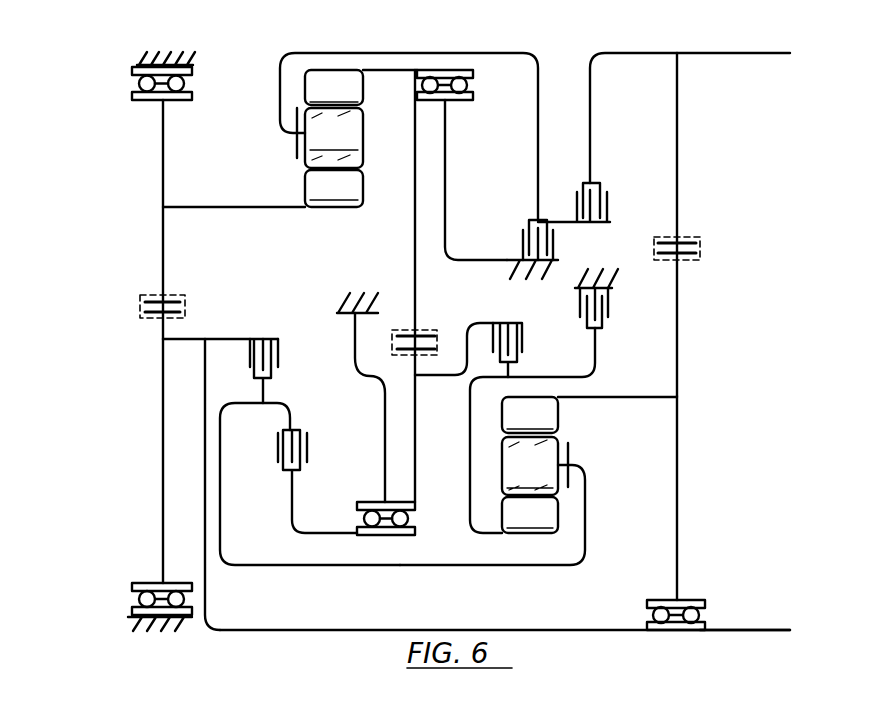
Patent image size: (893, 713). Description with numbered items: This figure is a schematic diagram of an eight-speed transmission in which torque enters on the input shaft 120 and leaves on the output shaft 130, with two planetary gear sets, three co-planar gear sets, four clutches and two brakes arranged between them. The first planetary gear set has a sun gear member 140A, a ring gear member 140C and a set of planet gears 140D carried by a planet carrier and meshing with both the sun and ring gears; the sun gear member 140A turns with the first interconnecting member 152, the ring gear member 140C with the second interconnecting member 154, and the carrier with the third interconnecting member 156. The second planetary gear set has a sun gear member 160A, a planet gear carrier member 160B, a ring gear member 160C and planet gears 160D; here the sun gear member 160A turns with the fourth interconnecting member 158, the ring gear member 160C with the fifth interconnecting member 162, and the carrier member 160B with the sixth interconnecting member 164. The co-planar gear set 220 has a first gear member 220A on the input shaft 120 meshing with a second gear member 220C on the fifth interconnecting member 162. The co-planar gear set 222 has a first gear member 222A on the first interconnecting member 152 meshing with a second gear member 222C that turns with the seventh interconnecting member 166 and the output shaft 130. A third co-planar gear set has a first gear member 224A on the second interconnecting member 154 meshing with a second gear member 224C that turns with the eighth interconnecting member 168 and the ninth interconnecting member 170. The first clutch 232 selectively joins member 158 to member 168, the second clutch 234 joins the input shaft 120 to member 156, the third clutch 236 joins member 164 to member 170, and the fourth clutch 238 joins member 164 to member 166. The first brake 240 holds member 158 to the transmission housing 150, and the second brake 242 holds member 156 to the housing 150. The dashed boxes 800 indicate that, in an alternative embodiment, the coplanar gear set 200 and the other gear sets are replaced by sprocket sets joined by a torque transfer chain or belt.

The input shaft or member 120 is at (588, 122).
The output member or shaft 130 is at (758, 632).
The sun gear member 140A is at (334, 188).
The ring gear member 140C is at (334, 87).
The planet gears 140D is at (334, 138).
The transmission housing 150 is at (135, 62).
The first shaft or interconnecting member 152 is at (220, 205).
The second shaft or interconnecting member 154 is at (382, 72).
The third shaft or interconnecting member 156 is at (497, 55).
The fourth shaft or interconnecting member 158 is at (470, 440).
The sun gear member 160A is at (530, 515).
The planet gear carrier member 160B is at (570, 453).
The ring gear member 160C is at (530, 415).
The planet gears 160D is at (530, 466).
The fifth shaft or interconnecting member 162 is at (655, 393).
The sixth shaft or interconnecting member 164 is at (258, 562).
The seventh shaft or interconnecting member 166 is at (185, 342).
The eighth shaft or interconnecting member 168 is at (440, 370).
The ninth shaft or interconnecting member 170 is at (327, 537).
The coplanar gear set 200 is at (561, 43).
The external or co-planar gear set 220 is at (719, 311).
The first gear member 220A is at (677, 140).
The second gear member 220C is at (677, 468).
The external or co-planar gear set 222 is at (119, 341).
The first gear member 222A is at (163, 139).
The second gear member 222C is at (160, 532).
The first gear member 224A is at (413, 190).
The second gear member 224C is at (417, 492).
The first clutch 232 is at (523, 340).
The second clutch 234 is at (577, 203).
The third clutch 236 is at (277, 440).
The fourth clutch 238 is at (247, 358).
The first brake 240 is at (608, 310).
The second brake 242 is at (523, 240).
The dashed boxes representing sprocket sets and chain or belt 800 is at (138, 308).